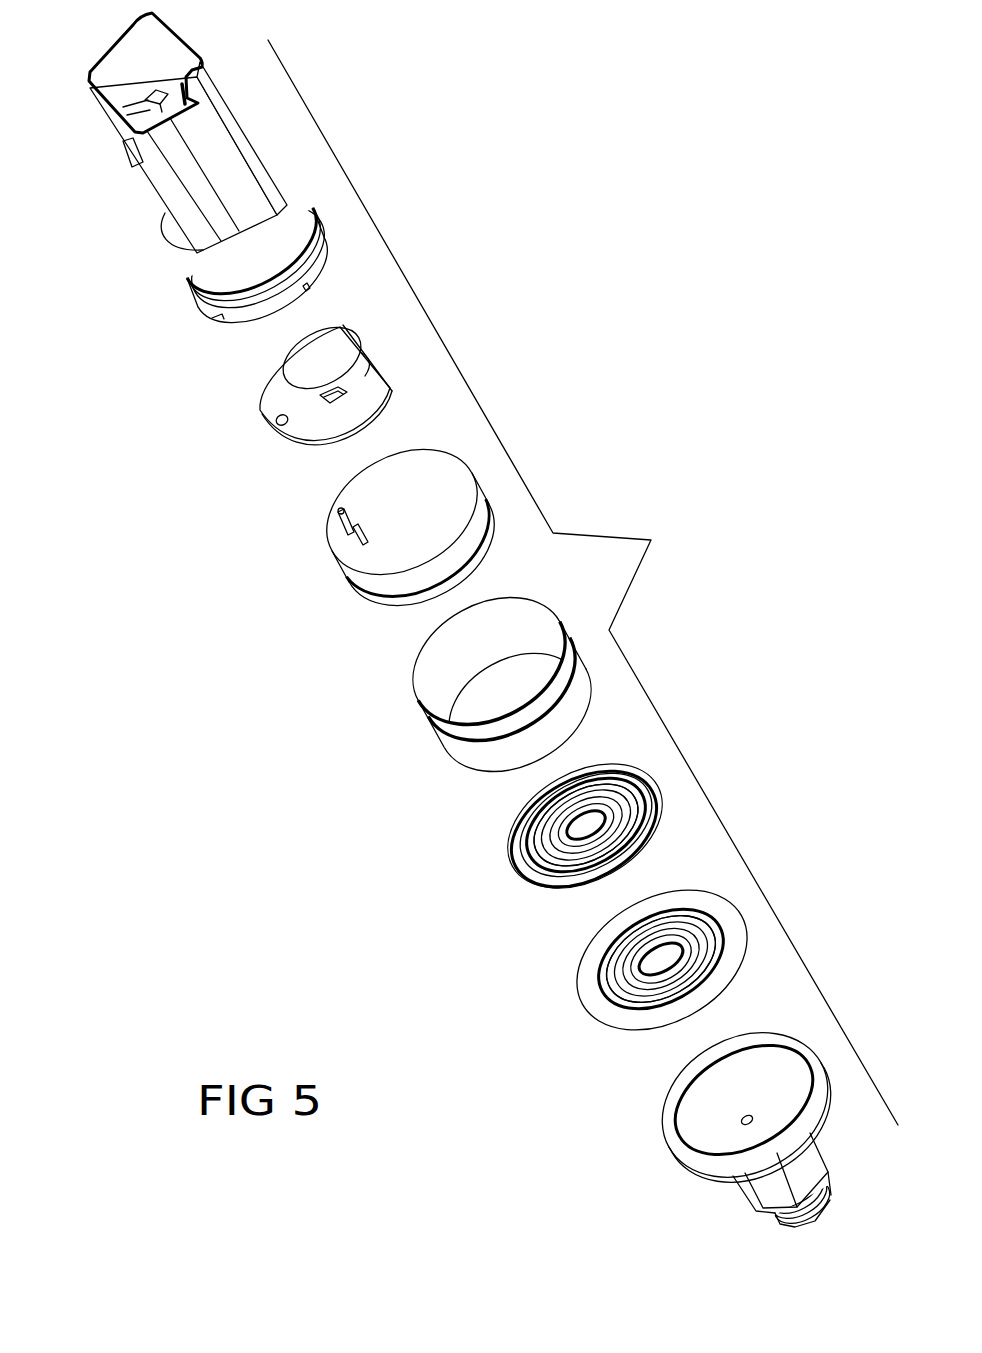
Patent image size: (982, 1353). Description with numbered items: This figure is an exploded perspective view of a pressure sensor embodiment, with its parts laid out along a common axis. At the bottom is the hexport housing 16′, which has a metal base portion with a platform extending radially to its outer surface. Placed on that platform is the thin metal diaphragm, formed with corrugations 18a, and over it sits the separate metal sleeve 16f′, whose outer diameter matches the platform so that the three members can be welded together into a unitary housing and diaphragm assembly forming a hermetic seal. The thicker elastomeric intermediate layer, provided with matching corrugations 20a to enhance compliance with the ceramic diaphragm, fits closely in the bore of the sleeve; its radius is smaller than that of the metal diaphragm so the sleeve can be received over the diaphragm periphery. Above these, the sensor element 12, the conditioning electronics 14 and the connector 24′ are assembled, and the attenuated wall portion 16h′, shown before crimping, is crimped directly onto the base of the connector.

The connector 24′ is at (142, 223).
The conditioning electronics 14 is at (250, 411).
The sensor element 12 is at (314, 550).
The attenuated wall portion 16h′ is at (413, 672).
The metal sleeve 16f′ is at (440, 748).
The corrugations 20a is at (616, 813).
The corrugations 18a is at (693, 945).
The hexport housing 16′ is at (735, 1194).